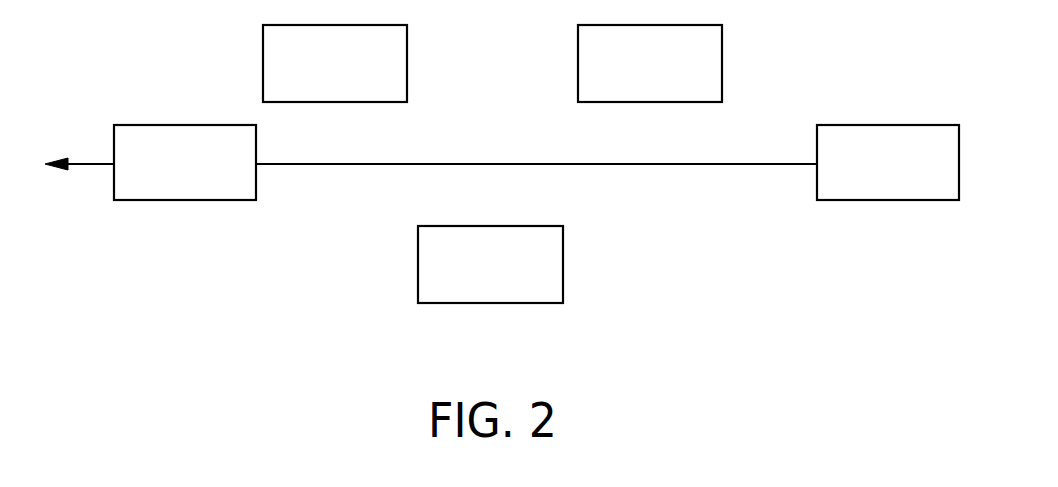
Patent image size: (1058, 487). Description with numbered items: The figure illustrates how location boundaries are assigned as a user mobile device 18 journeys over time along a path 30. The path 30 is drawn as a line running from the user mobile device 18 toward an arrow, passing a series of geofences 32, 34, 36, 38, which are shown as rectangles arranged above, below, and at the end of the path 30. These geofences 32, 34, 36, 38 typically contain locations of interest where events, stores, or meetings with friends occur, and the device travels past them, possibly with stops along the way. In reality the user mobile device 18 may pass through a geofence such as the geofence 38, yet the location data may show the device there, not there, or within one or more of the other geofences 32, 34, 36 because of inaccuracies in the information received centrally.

The user mobile device 18 is at (873, 174).
The path 30 is at (705, 164).
The geofence 32 is at (635, 76).
The geofence 34 is at (320, 76).
The geofence 36 is at (475, 276).
The geofence 38 is at (170, 174).